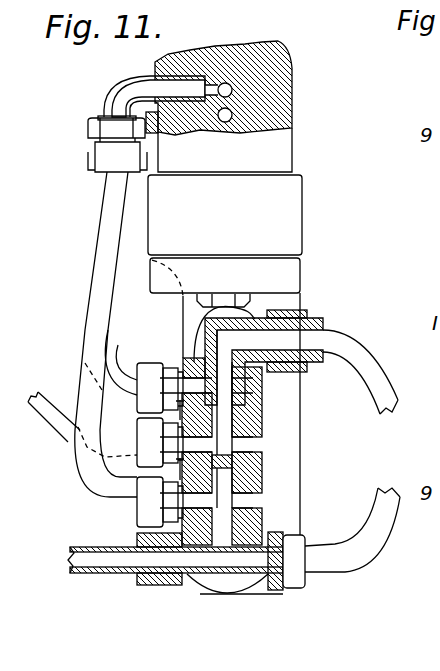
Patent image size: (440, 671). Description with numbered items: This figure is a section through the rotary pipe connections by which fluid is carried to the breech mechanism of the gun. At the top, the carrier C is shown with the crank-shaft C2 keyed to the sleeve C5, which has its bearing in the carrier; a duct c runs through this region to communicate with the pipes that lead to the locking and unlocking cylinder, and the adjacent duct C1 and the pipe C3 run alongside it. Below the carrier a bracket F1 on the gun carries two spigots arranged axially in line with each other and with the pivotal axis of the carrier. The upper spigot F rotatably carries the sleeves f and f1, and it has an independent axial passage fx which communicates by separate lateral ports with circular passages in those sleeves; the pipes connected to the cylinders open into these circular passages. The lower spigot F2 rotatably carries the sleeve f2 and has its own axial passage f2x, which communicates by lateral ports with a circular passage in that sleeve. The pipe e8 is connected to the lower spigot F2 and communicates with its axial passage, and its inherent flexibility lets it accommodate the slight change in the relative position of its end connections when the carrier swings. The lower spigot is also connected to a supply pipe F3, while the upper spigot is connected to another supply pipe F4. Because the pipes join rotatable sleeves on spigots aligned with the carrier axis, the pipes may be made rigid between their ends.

The duct c is at (233, 91).
The carrier C is at (262, 118).
The passage C1 is at (232, 118).
The crank-shaft C2 is at (108, 257).
The hose C3 is at (117, 377).
The sleeve C5 is at (65, 438).
The sleeve f is at (183, 358).
The sleeve f1 is at (118, 415).
The axial passage fx is at (222, 368).
The spigot F is at (262, 410).
The bracket F1 is at (267, 303).
The spigot F2 is at (262, 521).
The supply pipe F3 is at (378, 532).
The supply pipe F4 is at (365, 358).
The sleeve f2 is at (173, 523).
The pipe e8 is at (75, 560).
The axial passage f2x is at (210, 560).